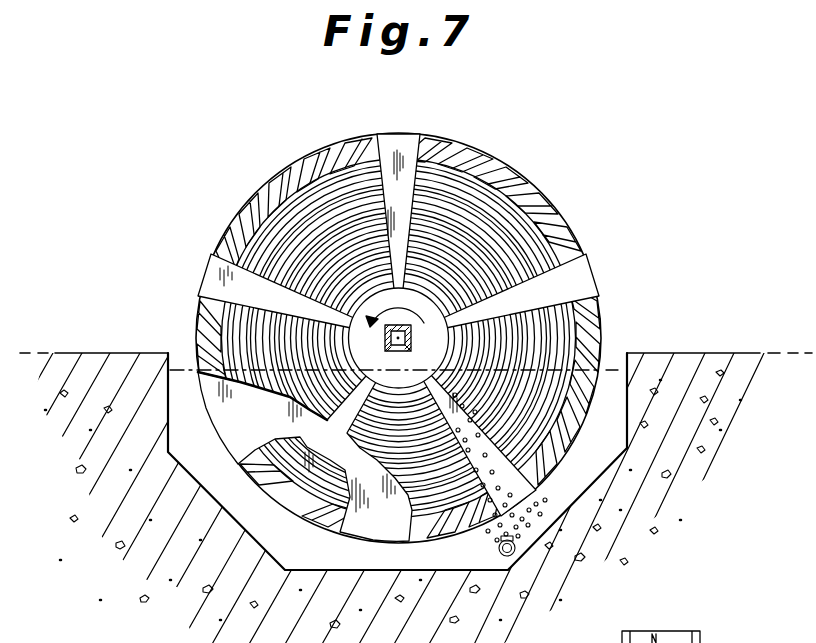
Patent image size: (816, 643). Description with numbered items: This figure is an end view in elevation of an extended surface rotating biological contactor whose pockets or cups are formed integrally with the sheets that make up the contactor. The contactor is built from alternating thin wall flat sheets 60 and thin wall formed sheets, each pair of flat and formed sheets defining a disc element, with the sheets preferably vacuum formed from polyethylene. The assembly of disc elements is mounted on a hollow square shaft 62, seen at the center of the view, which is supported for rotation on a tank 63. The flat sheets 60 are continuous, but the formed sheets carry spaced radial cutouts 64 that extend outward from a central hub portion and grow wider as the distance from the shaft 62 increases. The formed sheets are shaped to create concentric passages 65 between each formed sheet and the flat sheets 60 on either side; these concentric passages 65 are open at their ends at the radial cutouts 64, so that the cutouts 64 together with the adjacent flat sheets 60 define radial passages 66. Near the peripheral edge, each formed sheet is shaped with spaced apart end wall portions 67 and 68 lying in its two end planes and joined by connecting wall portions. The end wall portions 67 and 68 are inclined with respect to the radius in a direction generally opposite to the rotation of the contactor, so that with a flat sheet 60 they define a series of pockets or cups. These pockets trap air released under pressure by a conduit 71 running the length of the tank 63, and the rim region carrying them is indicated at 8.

The drum wheel rim 8 is at (327, 143).
The flat sheets 60 is at (447, 361).
The hollow square shaft 62 is at (386, 338).
The tank 63 is at (666, 352).
The radial cutouts 64 is at (422, 160).
The concentric passages 65 is at (296, 216).
The radial passages 66 is at (297, 490).
The end wall portions 67 is at (447, 144).
The end wall portions 68 is at (470, 153).
The conduit 71 is at (498, 552).